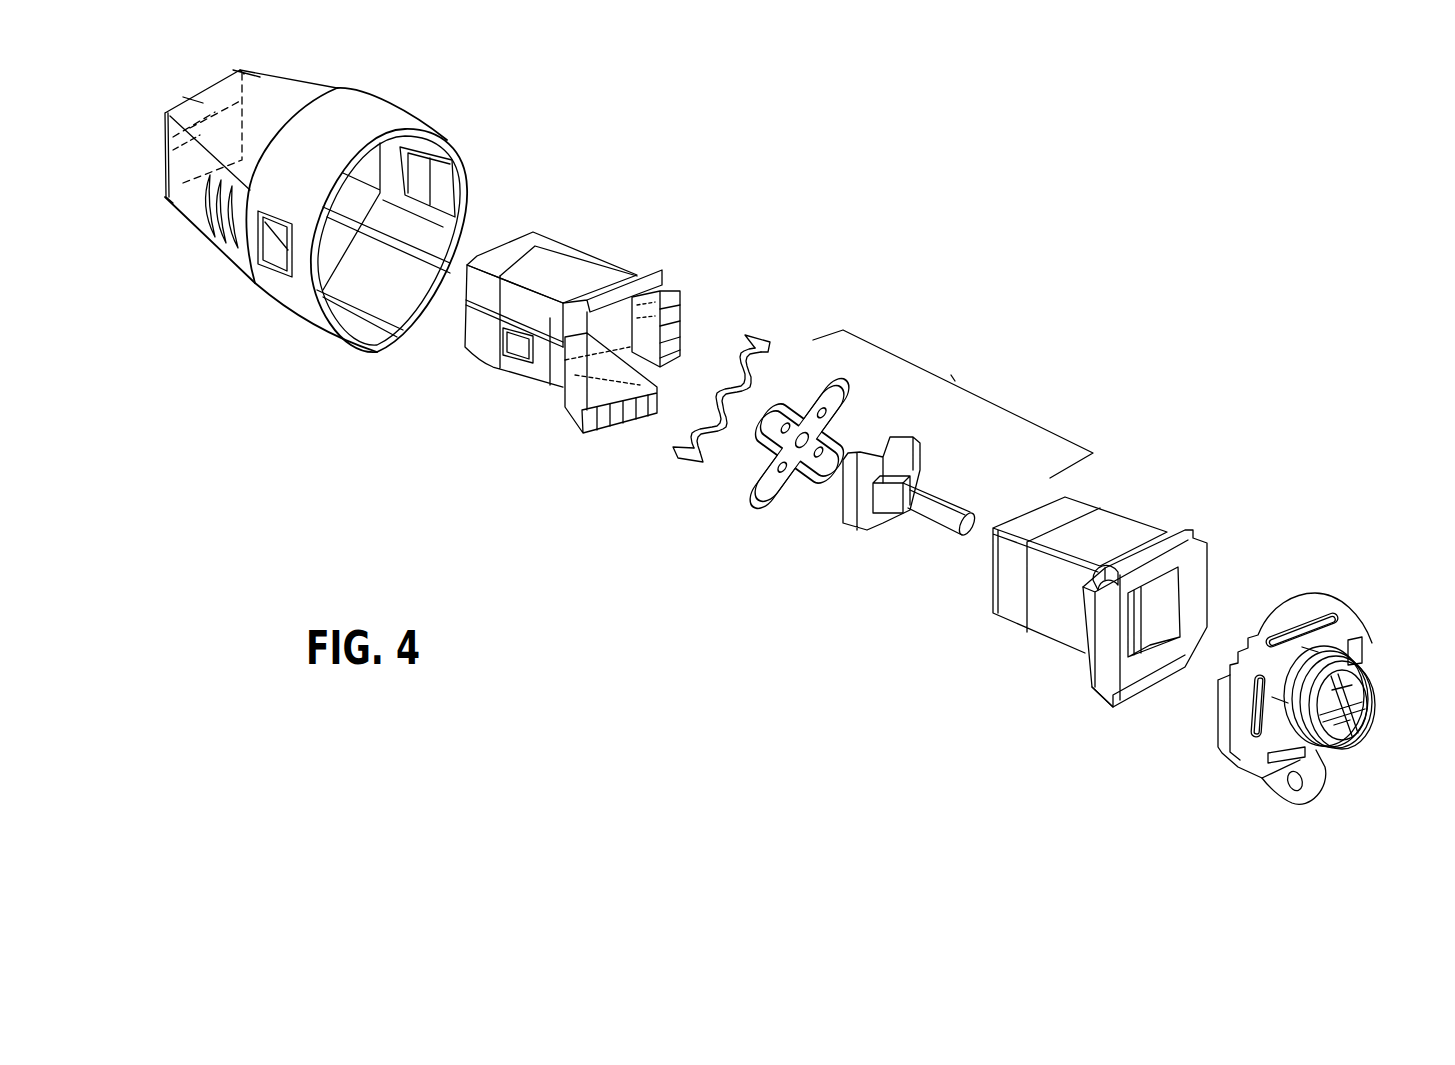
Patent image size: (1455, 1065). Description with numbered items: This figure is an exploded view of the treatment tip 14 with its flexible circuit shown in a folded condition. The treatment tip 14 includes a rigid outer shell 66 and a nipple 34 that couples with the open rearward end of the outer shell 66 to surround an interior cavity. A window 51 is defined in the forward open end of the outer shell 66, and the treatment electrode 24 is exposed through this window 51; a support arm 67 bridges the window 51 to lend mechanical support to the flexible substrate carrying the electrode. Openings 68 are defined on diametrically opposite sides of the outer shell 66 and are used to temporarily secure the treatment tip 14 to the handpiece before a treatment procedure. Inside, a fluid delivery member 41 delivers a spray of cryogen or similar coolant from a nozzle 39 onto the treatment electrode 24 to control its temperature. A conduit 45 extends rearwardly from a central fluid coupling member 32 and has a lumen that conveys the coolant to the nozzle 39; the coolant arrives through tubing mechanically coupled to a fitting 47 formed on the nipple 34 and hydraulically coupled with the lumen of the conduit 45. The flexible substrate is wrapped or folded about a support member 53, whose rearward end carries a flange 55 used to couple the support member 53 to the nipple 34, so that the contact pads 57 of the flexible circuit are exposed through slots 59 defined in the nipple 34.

The treatment tip 14 is at (988, 188).
The treatment electrode 24 is at (503, 246).
The central fluid coupling member 32 is at (846, 507).
The nipple 34 is at (1326, 595).
The nozzle 39 is at (796, 410).
The fluid delivery member 41 is at (953, 404).
The conduit 45 is at (923, 510).
The fitting 47 is at (1370, 668).
The window 51 is at (173, 149).
The support member 53 is at (1110, 521).
The flange 55 is at (1178, 530).
The contact pads 57 is at (683, 311).
The slots 59 is at (1362, 645).
The outer shell 66 is at (370, 115).
The support arm 67 is at (688, 457).
The openings 68 is at (422, 170).